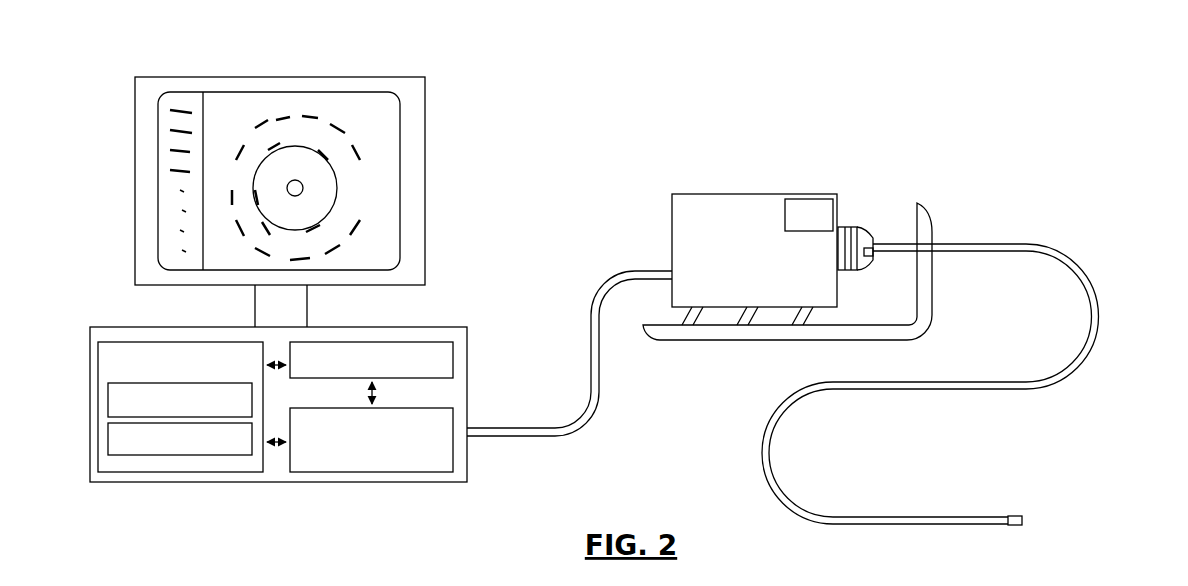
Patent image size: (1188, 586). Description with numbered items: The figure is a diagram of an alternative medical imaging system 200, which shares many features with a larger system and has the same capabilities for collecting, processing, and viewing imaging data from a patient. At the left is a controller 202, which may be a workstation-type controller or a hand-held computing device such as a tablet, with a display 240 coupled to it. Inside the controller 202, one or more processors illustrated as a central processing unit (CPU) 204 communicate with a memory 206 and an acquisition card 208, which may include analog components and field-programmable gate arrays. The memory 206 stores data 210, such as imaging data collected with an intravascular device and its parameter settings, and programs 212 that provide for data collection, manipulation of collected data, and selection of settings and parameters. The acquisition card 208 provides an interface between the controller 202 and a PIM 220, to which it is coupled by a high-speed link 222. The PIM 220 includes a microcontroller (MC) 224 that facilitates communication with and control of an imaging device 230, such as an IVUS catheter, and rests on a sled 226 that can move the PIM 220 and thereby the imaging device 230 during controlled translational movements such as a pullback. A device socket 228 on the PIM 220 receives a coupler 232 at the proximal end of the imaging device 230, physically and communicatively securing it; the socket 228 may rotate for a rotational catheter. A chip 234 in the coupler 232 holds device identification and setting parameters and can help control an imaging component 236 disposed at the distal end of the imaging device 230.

The medical imaging system 200 is at (1078, 72).
The controller 202 is at (318, 386).
The central processing unit (CPU) 204 is at (371, 360).
The memory 206 is at (180, 407).
The acquisition card 208 is at (371, 440).
The data 210 is at (180, 400).
The programs 212 is at (180, 439).
The PIM 220 is at (757, 211).
The high-speed link 222 is at (603, 284).
The microcontroller (MC) 224 is at (797, 198).
The sled 226 is at (698, 341).
The device socket 228 is at (848, 226).
The imaging device 230 is at (1093, 353).
The coupler 232 is at (865, 227).
The chip 234 is at (875, 258).
The imaging component 236 is at (1013, 516).
The display 240 is at (425, 118).